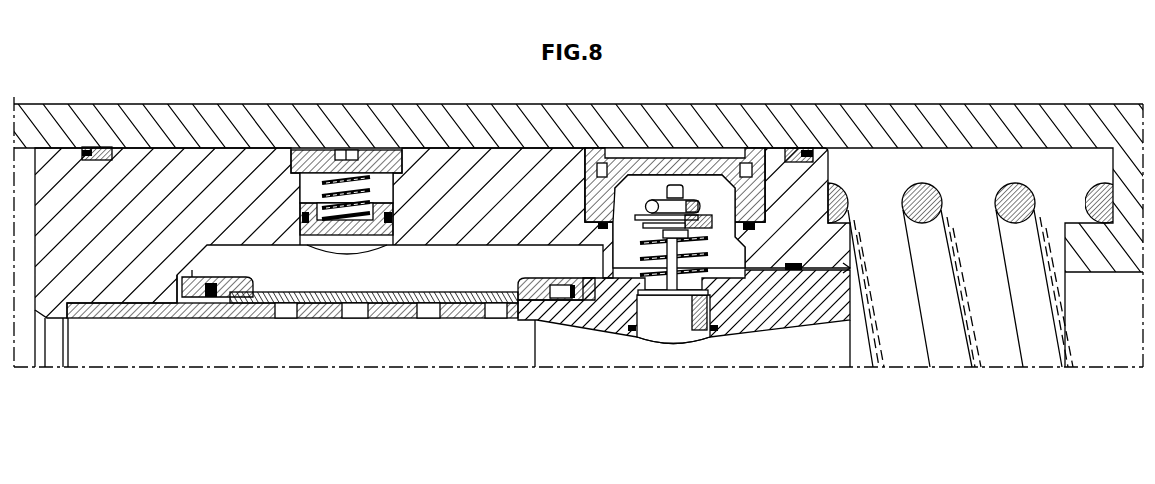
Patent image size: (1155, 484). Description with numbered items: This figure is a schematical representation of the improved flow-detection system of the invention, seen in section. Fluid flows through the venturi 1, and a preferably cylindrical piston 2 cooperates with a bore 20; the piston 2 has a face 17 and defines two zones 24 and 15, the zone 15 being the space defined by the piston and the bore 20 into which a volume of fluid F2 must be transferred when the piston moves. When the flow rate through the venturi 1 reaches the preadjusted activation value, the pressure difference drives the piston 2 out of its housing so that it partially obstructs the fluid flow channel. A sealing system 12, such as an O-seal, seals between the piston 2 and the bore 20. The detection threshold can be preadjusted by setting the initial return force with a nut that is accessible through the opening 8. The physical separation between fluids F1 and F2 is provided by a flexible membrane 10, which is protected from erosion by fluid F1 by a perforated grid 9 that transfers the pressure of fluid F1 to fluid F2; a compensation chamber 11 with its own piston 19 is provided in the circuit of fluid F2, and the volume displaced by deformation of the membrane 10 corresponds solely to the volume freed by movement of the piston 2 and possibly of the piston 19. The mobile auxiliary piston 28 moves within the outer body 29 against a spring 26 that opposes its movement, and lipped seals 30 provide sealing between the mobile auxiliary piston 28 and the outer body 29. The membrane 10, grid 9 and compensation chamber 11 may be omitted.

The venturi 1 is at (790, 300).
The piston 2 is at (680, 315).
The opening 8 is at (650, 165).
The grid 9 is at (340, 318).
The flexible membrane 10 is at (437, 303).
The compensation chamber 11 is at (377, 170).
The sealing system 12 is at (708, 305).
The zone 15 is at (655, 276).
The piston face 17 is at (655, 338).
The piston of the compensation chamber 19 is at (300, 204).
The bore 20 is at (717, 303).
The zone 24 is at (667, 362).
The spring 26 is at (922, 184).
The mobile auxiliary piston 28 is at (520, 155).
The outer body 29 is at (457, 127).
The lipped seals 30 is at (105, 146).